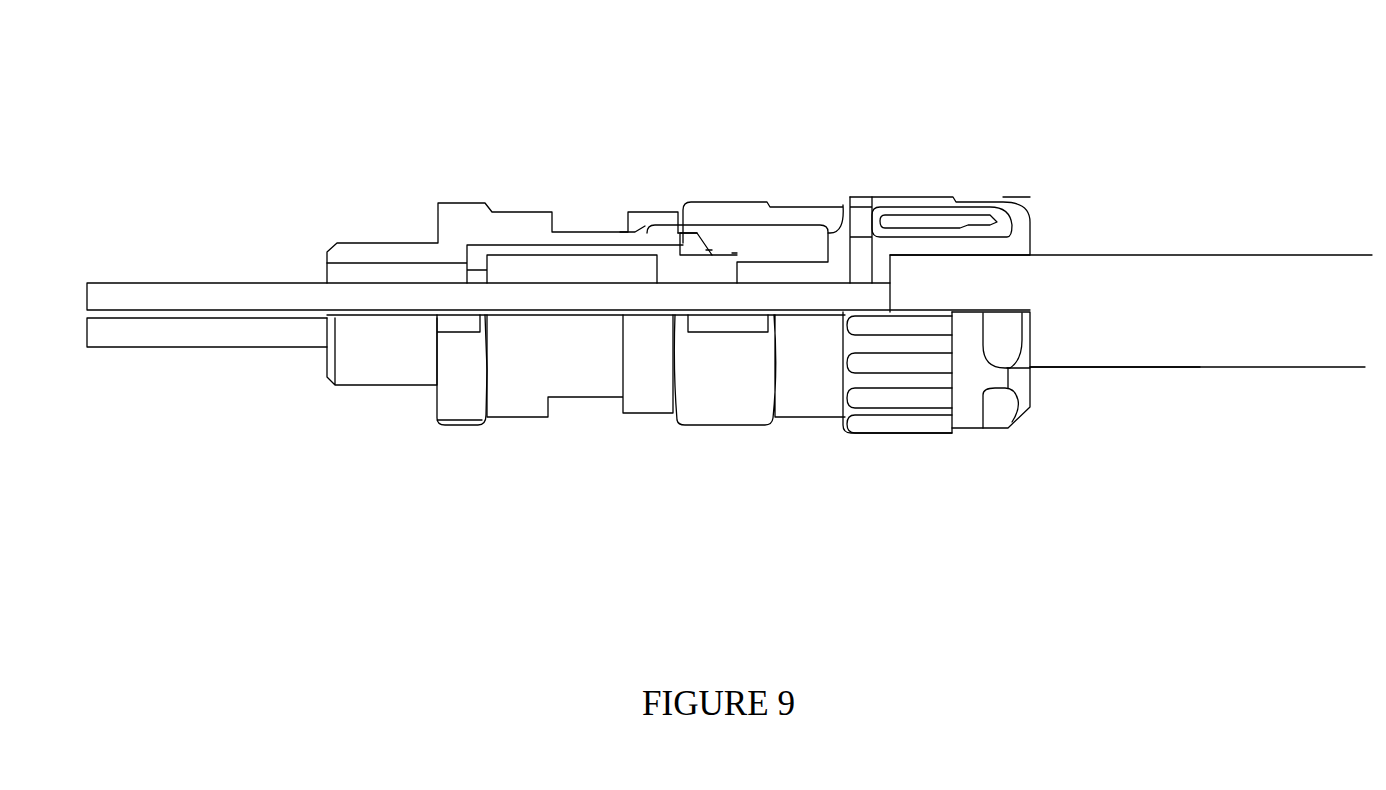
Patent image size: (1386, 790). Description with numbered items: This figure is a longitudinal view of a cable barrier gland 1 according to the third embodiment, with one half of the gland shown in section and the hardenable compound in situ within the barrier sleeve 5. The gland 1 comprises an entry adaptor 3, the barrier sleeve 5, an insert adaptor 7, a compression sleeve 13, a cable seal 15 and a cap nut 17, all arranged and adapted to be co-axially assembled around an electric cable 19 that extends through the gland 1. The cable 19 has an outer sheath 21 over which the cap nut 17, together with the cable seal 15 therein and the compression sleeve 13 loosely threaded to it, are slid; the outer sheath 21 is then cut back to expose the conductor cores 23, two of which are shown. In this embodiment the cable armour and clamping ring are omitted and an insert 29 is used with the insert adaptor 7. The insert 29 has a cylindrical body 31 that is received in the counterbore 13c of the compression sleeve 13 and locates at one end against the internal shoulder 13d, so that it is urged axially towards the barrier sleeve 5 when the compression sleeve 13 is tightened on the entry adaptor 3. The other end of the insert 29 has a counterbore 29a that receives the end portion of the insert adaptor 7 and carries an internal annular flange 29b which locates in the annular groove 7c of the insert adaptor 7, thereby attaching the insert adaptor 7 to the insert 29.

The gland 1 is at (1155, 132).
The entry adaptor 3 is at (461, 393).
The barrier sleeve 5 is at (580, 243).
The insert adaptor 7 is at (685, 257).
The annular groove 7c is at (710, 258).
The compression sleeve 13 is at (722, 398).
The counterbore 13c is at (712, 250).
The internal shoulder 13d is at (848, 201).
The cable seal 15 is at (962, 217).
The cap nut 17 is at (926, 412).
The electric cable 19 is at (1249, 343).
The outer sheath 21 is at (1128, 372).
The conductor cores 23 is at (196, 291).
The insert 29 is at (780, 247).
The counterbore 29a is at (732, 253).
The internal annular flange 29b is at (712, 252).
The cylindrical body 31 is at (752, 223).